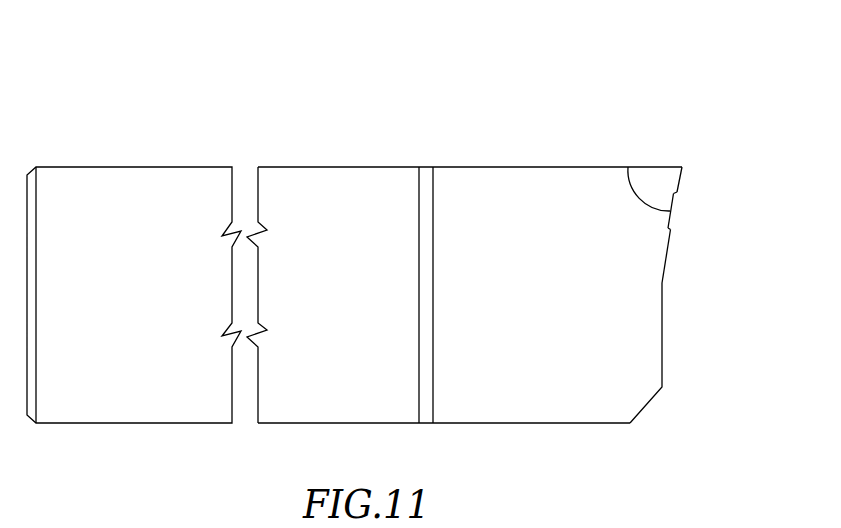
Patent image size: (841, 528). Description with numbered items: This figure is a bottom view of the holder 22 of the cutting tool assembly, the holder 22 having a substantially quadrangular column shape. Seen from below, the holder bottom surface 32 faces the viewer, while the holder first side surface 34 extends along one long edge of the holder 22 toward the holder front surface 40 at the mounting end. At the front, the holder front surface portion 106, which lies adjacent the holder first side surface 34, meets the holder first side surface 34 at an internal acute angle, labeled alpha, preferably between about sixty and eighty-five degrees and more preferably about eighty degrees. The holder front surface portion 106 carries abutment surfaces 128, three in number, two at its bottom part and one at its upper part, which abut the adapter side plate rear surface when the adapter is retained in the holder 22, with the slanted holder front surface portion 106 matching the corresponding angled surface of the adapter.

The holder 22 is at (409, 242).
The holder bottom surface 32 is at (549, 403).
The holder first side surface 34 is at (505, 167).
The holder front surface 40 is at (663, 358).
The holder front surface portion 106 is at (696, 204).
The abutment surfaces 128 is at (685, 182).